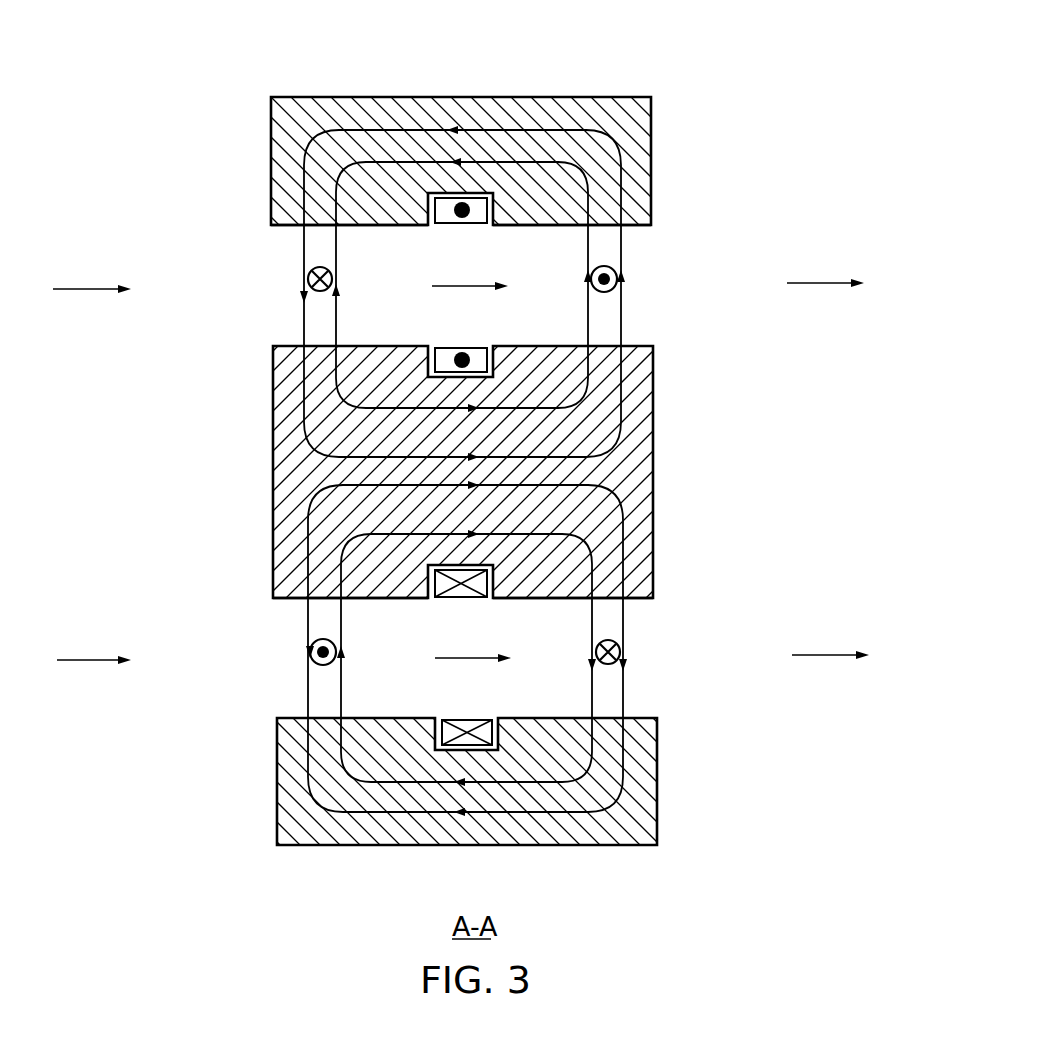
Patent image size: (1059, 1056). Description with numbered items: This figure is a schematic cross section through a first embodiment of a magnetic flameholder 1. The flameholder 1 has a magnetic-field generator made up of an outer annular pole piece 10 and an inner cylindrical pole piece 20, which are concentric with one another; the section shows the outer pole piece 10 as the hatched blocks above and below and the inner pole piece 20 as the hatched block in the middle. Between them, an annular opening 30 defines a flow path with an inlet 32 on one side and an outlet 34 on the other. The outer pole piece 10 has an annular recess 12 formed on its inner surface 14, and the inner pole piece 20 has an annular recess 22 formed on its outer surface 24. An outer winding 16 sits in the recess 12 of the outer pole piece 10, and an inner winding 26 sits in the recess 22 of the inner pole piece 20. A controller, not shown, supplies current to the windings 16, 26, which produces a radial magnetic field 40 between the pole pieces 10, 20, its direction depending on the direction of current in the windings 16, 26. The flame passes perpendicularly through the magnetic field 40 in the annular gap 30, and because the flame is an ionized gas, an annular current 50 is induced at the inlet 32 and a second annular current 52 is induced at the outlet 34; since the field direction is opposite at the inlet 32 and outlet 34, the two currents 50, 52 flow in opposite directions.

The magnetic flameholder 1 is at (743, 47).
The outer annular pole piece 10 is at (651, 125).
The annular recess 12 is at (432, 193).
The inner surface 14 is at (270, 228).
The outer winding 16 is at (468, 733).
The inner cylindrical pole piece 20 is at (654, 465).
The annular recess 22 is at (428, 379).
The outer surface 24 is at (273, 598).
The inner winding 26 is at (432, 580).
The annular opening 30 is at (390, 292).
The inlet 32 is at (276, 288).
The outlet 34 is at (675, 661).
The radial magnetic field 40 is at (626, 634).
The annular current 50 is at (618, 276).
The annular current 52 is at (308, 655).